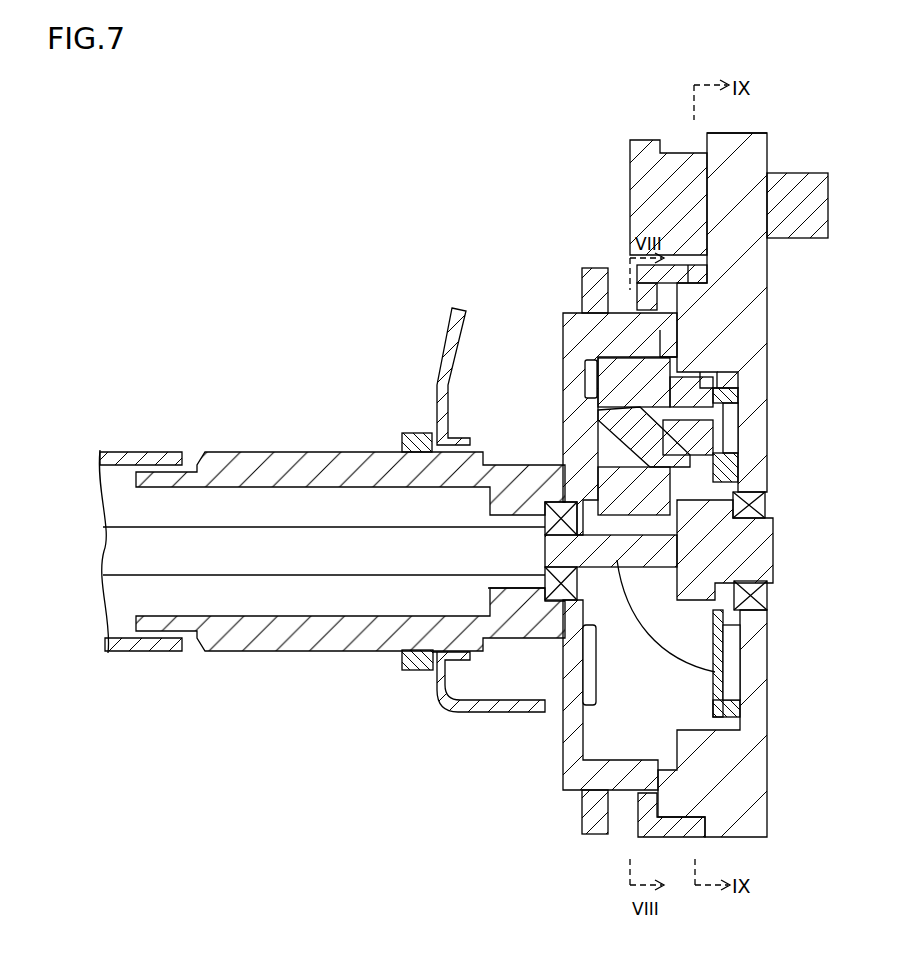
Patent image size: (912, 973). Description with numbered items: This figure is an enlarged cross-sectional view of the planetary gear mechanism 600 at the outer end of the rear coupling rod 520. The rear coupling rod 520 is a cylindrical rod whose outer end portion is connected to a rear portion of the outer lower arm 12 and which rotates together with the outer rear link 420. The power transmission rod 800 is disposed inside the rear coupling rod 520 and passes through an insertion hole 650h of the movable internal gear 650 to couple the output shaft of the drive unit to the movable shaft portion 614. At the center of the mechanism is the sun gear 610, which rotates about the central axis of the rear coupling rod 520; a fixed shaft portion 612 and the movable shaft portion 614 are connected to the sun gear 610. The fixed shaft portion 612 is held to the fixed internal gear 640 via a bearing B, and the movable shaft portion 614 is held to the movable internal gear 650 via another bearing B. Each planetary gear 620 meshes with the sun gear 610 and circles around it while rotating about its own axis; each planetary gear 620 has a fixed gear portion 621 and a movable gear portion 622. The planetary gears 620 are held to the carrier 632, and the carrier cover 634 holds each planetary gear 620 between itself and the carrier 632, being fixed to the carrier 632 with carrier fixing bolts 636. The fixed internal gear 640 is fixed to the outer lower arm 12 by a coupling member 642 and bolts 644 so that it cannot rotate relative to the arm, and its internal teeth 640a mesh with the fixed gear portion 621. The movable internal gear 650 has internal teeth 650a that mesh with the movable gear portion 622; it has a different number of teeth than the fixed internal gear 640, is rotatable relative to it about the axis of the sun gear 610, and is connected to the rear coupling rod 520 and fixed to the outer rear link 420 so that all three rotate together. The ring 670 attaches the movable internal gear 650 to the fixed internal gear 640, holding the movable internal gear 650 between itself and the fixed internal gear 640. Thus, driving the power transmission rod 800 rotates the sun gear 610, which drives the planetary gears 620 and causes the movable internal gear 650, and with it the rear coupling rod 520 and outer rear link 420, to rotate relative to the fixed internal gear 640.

The outer lower arm 12 is at (450, 353).
The outer rear link 420 is at (593, 266).
The rear coupling rod 520 is at (235, 452).
The planetary gear mechanism 600 is at (765, 126).
The sun gear 610 is at (697, 603).
The fixed shaft portion 612 is at (763, 552).
The movable shaft portion 614 is at (713, 627).
The planetary gear 620 is at (615, 386).
The fixed gear portion 621 is at (677, 372).
The movable gear portion 622 is at (678, 338).
The carrier 632 is at (603, 417).
The carrier cover 634 is at (738, 390).
The carrier fixing bolt 636 is at (723, 425).
The fixed internal gear 640 is at (757, 270).
The internal teeth 640a is at (717, 380).
The coupling member 642 is at (650, 138).
The bolt 644 is at (805, 173).
The movable internal gear 650 is at (574, 312).
The internal teeth 650a is at (582, 367).
The insertion hole 650h is at (505, 582).
The ring 670 is at (687, 270).
The power transmission rod 800 is at (298, 540).
The bearing B is at (760, 502).